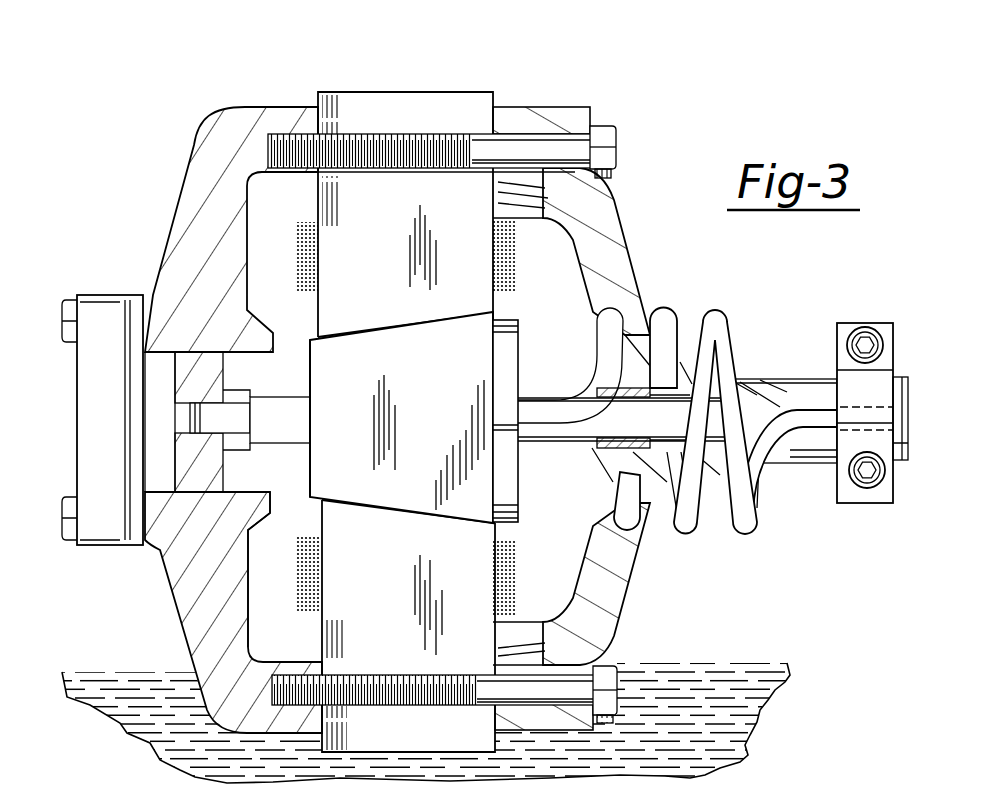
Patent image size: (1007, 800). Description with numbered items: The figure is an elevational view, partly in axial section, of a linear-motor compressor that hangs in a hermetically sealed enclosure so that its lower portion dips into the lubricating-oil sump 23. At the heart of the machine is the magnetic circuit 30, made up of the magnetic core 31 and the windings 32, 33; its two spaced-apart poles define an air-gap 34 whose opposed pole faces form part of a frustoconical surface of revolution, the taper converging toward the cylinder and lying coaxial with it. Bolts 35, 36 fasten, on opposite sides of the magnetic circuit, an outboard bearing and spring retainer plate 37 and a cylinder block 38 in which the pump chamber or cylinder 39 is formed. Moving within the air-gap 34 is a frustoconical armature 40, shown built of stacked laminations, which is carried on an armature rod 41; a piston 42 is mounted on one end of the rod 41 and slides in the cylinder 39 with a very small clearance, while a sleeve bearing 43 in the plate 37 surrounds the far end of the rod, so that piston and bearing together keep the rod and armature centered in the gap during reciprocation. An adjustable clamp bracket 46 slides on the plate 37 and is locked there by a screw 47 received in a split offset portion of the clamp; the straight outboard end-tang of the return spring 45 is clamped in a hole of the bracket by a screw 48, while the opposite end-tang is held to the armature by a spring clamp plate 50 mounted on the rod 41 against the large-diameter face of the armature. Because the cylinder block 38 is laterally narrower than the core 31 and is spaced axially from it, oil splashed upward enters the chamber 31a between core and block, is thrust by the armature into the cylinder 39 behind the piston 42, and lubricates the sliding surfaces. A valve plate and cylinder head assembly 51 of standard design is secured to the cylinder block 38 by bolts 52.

The sump 23 is at (700, 680).
The magnetic circuit 30 is at (410, 72).
The magnetic core 31 is at (483, 91).
The chamber 31a is at (267, 577).
The winding 32 is at (293, 590).
The winding 33 is at (310, 222).
The air-gap 34 is at (350, 336).
The bolt 35 is at (614, 148).
The bolt 36 is at (615, 680).
The outboard bearing and spring retainer plate 37 is at (636, 262).
The cylinder block 38 is at (183, 193).
The pump chamber or cylinder 39 is at (150, 498).
The frustoconical armature 40 is at (405, 410).
The armature rod 41 is at (298, 427).
The piston 42 is at (268, 368).
The sleeve bearing 43 is at (588, 447).
The return spring 45 is at (727, 343).
The adjustable clamp bracket 46 is at (847, 318).
The screw 47 is at (897, 325).
The screw 48 is at (877, 499).
The spring clamp plate 50 is at (524, 332).
The valve plate and cylinder head assembly 51 is at (98, 292).
The bolt 52 is at (74, 298).